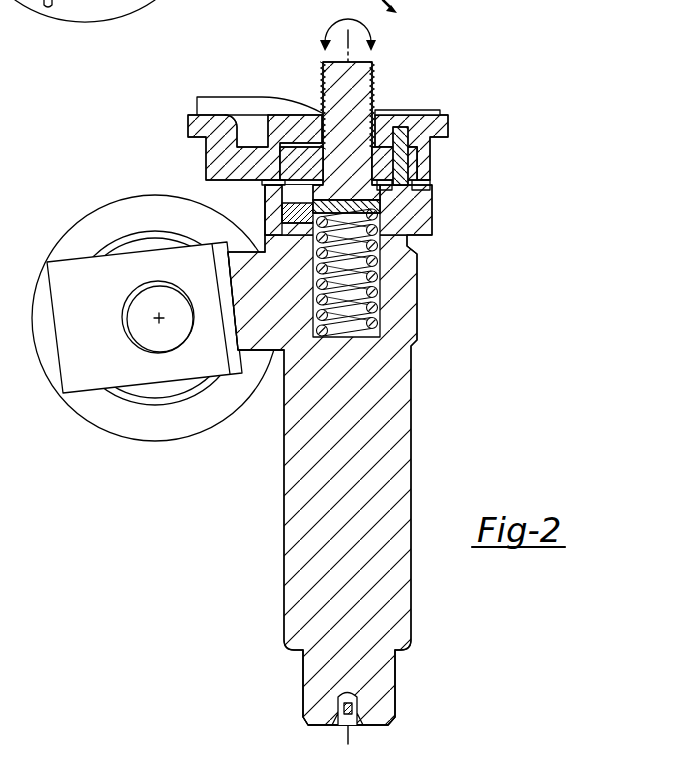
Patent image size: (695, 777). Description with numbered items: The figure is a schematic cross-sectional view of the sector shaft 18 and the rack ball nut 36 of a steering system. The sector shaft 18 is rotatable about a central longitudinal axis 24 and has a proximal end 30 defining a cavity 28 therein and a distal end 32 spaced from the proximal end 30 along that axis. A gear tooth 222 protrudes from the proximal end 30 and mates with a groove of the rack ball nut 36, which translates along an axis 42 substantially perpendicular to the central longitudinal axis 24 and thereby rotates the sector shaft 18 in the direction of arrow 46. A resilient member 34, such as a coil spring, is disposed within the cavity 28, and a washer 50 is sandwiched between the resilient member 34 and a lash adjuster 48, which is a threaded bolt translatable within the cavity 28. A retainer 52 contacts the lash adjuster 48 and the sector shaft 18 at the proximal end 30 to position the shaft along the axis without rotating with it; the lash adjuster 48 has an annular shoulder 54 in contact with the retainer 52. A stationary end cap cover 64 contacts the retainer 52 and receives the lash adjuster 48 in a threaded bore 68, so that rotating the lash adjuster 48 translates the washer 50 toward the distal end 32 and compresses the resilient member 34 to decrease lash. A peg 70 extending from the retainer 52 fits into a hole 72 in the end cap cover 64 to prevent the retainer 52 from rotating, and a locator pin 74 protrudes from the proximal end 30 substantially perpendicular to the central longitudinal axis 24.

The sector shaft 18 is at (412, 418).
The central longitudinal axis 24 is at (350, 738).
The cavity 28 is at (391, 272).
The proximal end 30 is at (431, 219).
The distal end 32 is at (395, 689).
The resilient member 34 is at (377, 297).
The rack ball nut 36 is at (122, 434).
The axis 42 is at (158, 318).
The arrow 46 is at (333, 27).
The lash adjuster 48 is at (322, 88).
The washer 50 is at (378, 205).
The retainer 52 is at (265, 205).
The annular shoulder 54 is at (300, 143).
The end cap cover 64 is at (447, 122).
The bore 68 is at (316, 101).
The peg 70 is at (404, 168).
The hole 72 is at (400, 120).
The locator pin 74 is at (300, 224).
The gear tooth 222 is at (263, 328).